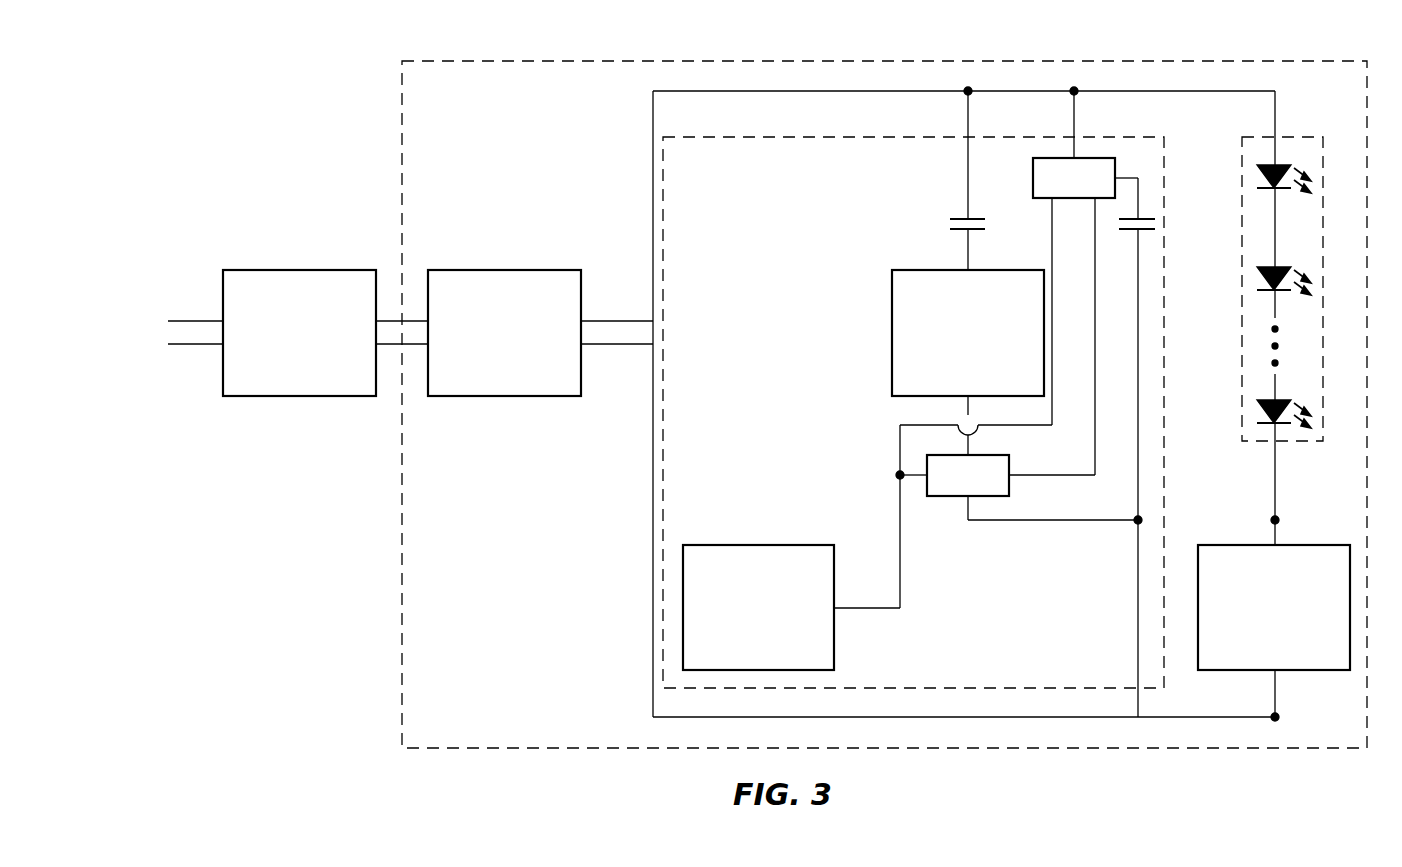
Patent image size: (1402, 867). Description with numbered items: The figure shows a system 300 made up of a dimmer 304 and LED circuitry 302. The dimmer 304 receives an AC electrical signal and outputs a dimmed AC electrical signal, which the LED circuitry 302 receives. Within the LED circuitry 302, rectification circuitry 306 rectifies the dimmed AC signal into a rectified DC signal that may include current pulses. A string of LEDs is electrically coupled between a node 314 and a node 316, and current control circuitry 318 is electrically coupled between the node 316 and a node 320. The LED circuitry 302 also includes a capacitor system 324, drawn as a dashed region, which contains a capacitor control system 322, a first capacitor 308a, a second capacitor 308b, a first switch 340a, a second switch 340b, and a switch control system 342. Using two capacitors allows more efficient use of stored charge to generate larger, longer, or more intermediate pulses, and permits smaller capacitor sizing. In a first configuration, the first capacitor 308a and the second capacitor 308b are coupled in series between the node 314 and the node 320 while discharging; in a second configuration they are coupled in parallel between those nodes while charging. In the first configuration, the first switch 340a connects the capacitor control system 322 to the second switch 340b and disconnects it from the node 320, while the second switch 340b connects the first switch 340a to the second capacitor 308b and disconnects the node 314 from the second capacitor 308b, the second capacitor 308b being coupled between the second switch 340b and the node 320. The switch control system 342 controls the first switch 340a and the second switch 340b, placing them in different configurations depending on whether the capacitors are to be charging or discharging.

The system 300 is at (225, 66).
The LED circuitry 302 is at (1316, 61).
The dimmer 304 is at (299, 333).
The rectification circuitry 306 is at (504, 333).
The first capacitor 308a is at (965, 216).
The second capacitor 308b is at (1150, 216).
The node 314 is at (968, 88).
The node 316 is at (1279, 520).
The current control circuitry 318 is at (1274, 607).
The node 320 is at (1279, 718).
The capacitor control system 322 is at (968, 333).
The capacitor system 324 is at (978, 138).
The first switch 340a is at (940, 497).
The second switch 340b is at (1091, 158).
The switch control system 342 is at (758, 607).